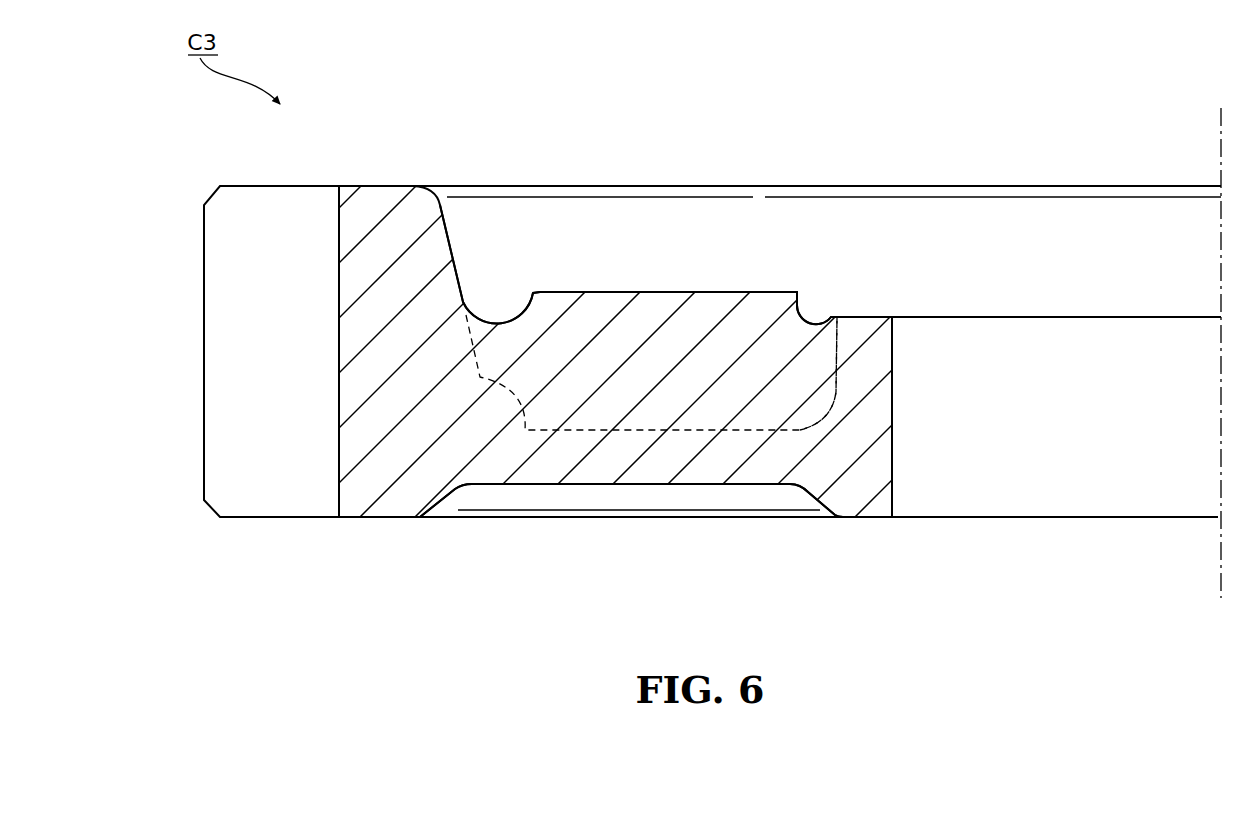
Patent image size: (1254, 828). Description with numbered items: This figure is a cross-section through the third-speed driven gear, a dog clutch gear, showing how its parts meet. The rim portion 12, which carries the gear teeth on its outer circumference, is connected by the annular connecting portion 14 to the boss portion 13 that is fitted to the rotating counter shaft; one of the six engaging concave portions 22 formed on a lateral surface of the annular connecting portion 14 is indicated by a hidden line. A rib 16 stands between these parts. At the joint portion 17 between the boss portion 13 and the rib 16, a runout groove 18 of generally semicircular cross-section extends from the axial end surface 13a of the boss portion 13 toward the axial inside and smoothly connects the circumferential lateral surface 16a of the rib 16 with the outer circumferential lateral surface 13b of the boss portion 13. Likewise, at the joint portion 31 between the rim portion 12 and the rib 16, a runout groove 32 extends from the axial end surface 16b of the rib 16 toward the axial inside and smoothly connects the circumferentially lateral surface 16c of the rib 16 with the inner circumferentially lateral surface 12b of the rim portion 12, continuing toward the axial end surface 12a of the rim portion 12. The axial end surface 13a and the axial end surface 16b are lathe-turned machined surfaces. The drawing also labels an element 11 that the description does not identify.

The outer ring member 11 is at (248, 300).
The rim portion 12 is at (400, 343).
The axial end surface of the rim portion 12a is at (380, 186).
The inner circumferentially lateral surface of the rim portion 12b is at (466, 318).
The boss portion 13 is at (865, 407).
The axial end surface of the boss portion 13a is at (868, 319).
The outer circumferential lateral surface of the boss portion 13b is at (840, 320).
The annular connecting portion 14 is at (645, 467).
The rib 16 is at (595, 315).
The circumferential lateral surface of the rib 16a is at (798, 304).
The axial end surface of the rib 16b is at (655, 292).
The circumferentially lateral surface of the rib 16c is at (536, 293).
The joint portion 17 is at (823, 347).
The runout groove 18 is at (818, 326).
The engaging concave portion 22 is at (705, 424).
The joint portion 31 is at (500, 350).
The runout groove 32 is at (498, 320).